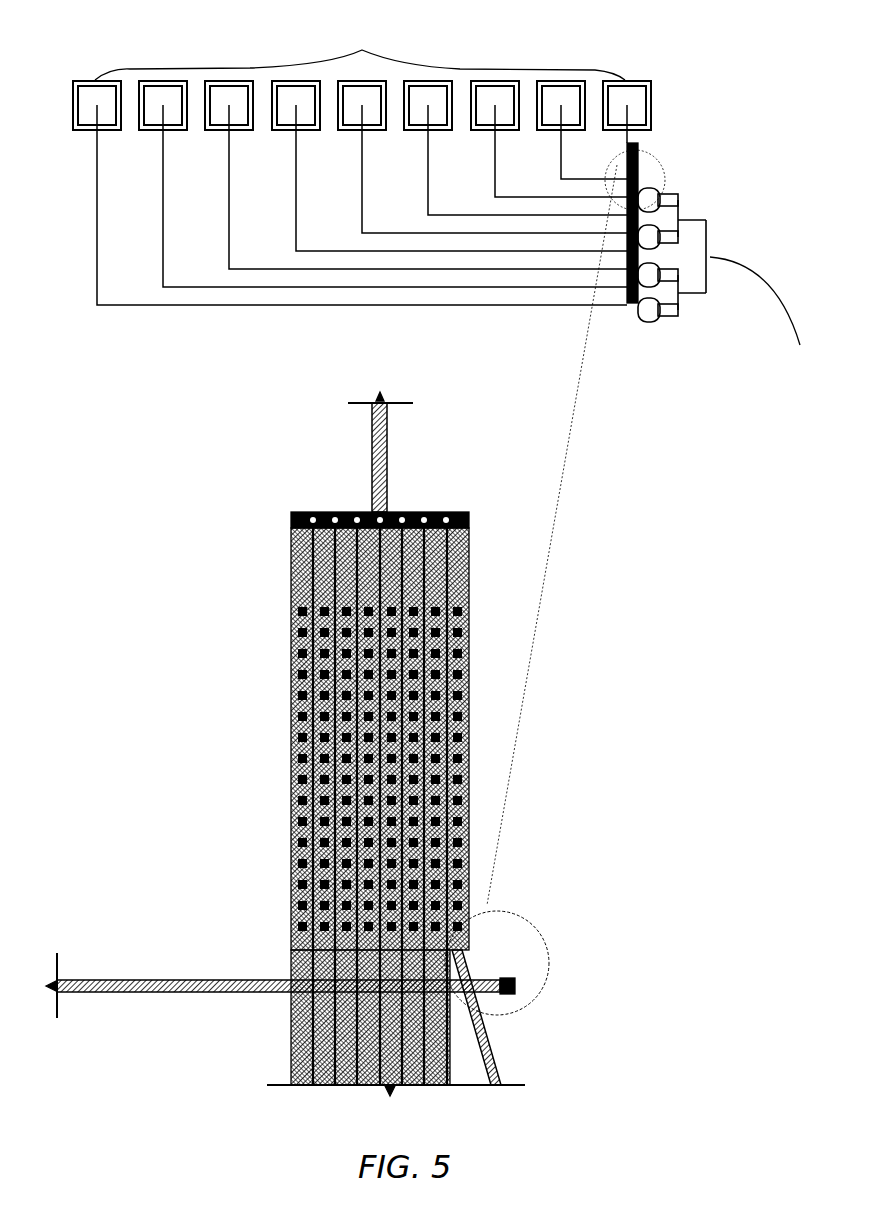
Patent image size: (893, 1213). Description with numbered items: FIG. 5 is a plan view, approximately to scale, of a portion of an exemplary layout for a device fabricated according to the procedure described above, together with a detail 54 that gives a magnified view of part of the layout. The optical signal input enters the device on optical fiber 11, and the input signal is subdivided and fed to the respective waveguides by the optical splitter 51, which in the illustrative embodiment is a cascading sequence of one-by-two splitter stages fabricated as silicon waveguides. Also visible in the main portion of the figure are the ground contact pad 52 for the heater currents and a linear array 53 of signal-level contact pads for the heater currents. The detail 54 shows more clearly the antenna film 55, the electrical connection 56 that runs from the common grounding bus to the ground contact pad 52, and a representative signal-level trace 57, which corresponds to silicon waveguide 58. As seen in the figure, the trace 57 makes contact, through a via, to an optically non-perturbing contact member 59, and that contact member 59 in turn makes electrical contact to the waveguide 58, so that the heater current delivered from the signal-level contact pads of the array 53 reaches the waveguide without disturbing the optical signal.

The optical fiber 11 is at (768, 270).
The optical splitter 51 is at (706, 227).
The ground contact pad 52 is at (652, 100).
The linear array of signal-level contact pads 53 is at (362, 50).
The detail 54 is at (195, 540).
The antenna film 55 is at (291, 783).
The electrical connection 56 is at (372, 465).
The signal-level trace 57 is at (176, 978).
The silicon waveguide 58 is at (480, 1052).
The optically non-perturbing contact member 59 is at (533, 940).